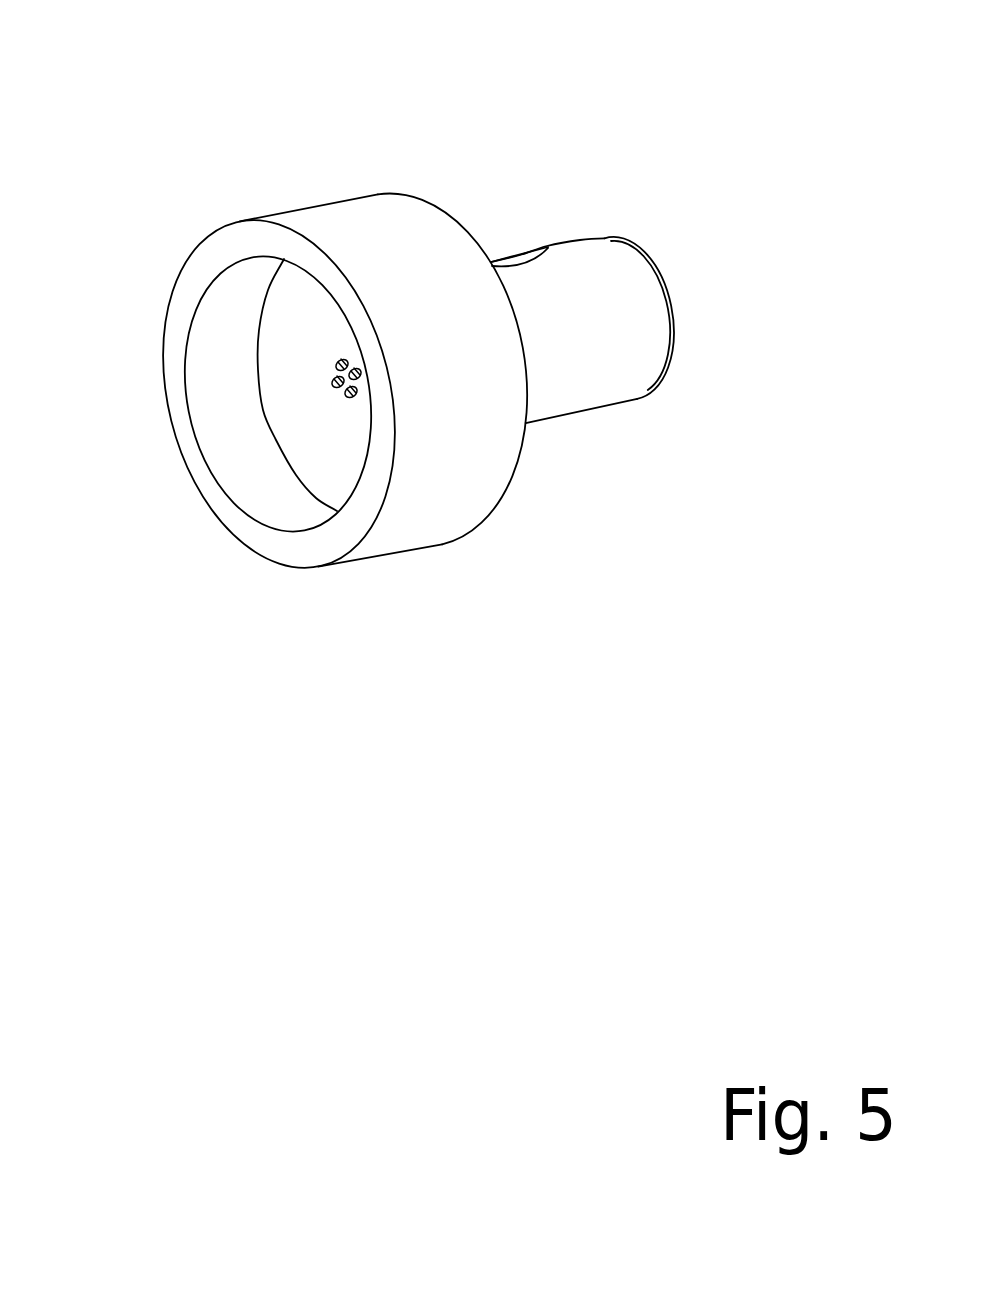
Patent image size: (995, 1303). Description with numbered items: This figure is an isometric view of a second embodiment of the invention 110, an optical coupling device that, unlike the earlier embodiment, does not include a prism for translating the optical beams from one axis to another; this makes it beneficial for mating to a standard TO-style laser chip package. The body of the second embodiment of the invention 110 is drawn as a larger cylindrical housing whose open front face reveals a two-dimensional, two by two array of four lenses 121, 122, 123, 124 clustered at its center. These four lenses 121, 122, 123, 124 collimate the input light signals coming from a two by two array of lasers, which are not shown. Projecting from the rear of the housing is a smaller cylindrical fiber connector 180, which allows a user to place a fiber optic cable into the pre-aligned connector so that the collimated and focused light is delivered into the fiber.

The second embodiment of the invention 110 is at (428, 133).
The lens 121 is at (358, 378).
The lens 122 is at (352, 398).
The lens 123 is at (337, 364).
The lens 124 is at (333, 383).
The fiber connector 180 is at (598, 282).